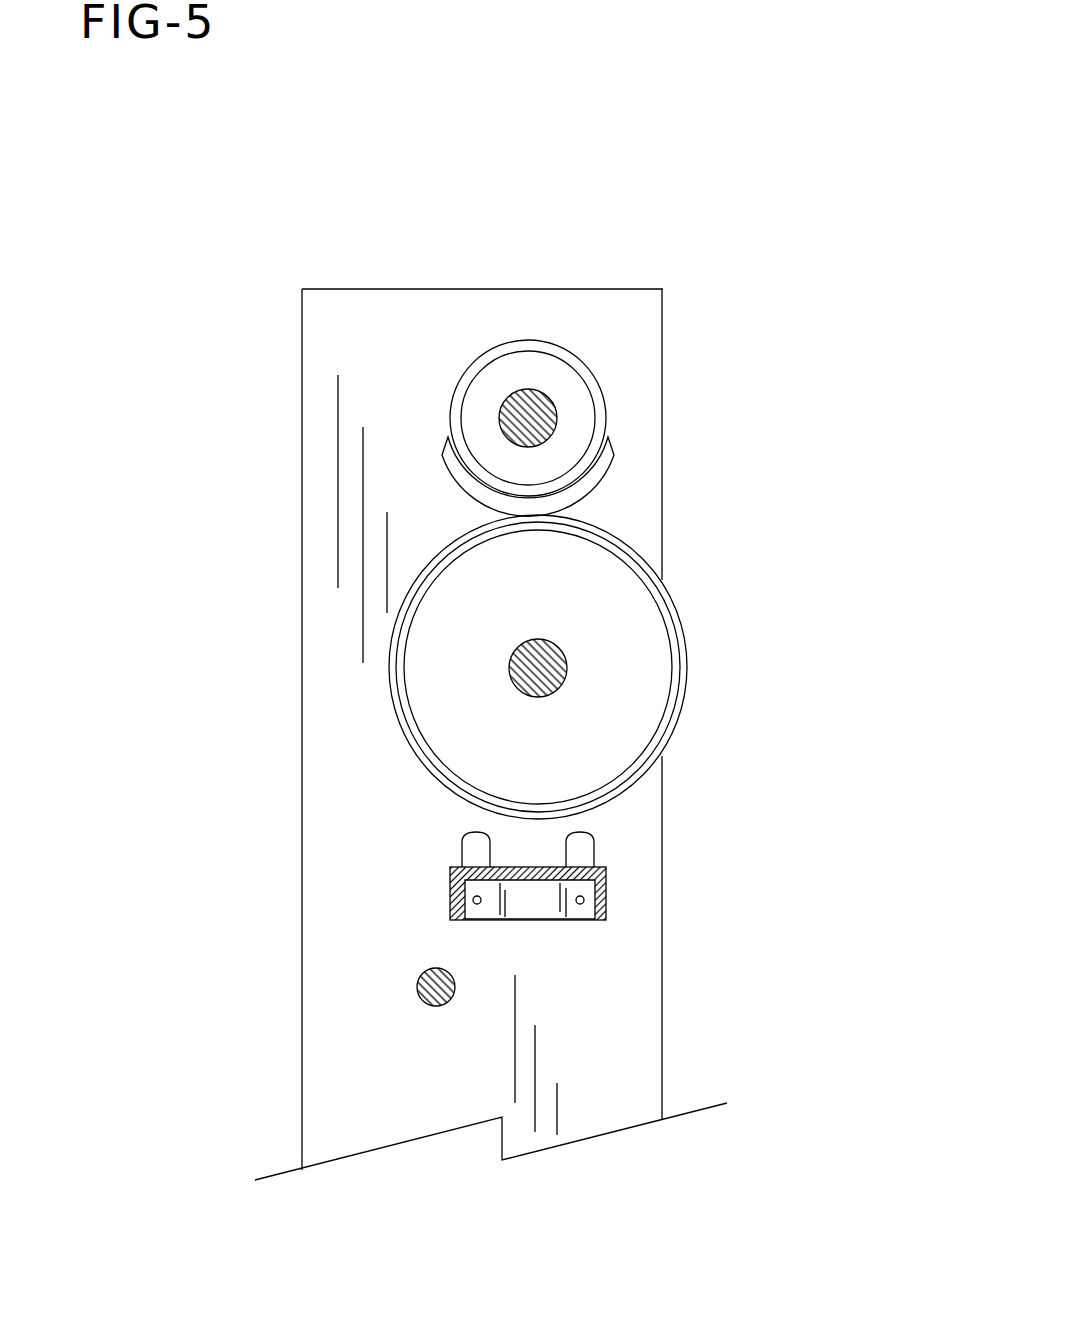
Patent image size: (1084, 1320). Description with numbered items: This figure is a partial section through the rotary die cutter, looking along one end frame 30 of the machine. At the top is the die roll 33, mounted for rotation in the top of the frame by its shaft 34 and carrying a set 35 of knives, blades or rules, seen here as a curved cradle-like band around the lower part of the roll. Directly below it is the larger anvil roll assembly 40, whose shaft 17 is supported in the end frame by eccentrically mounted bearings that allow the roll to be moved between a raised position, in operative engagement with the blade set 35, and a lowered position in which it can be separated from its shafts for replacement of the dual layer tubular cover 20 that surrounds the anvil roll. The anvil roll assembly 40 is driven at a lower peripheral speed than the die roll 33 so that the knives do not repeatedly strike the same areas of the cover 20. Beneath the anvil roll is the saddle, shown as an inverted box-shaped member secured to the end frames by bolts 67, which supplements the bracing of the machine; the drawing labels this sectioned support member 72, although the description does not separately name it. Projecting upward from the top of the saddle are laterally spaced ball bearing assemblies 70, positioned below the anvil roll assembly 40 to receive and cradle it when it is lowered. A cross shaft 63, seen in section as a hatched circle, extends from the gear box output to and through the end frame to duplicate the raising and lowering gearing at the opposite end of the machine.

The anvil roll shaft 17 is at (558, 670).
The dual layer tubular cover 20 is at (676, 653).
The end frame 30 is at (614, 264).
The die roll 33 is at (562, 382).
The die roll shaft 34 is at (528, 390).
The set of knives 35 is at (600, 478).
The anvil roll assembly 40 is at (712, 623).
The cross shaft 63 is at (417, 975).
The bolts 67 is at (477, 900).
The ball bearing assemblies 70 is at (580, 832).
The mounting bracket 72 is at (605, 892).